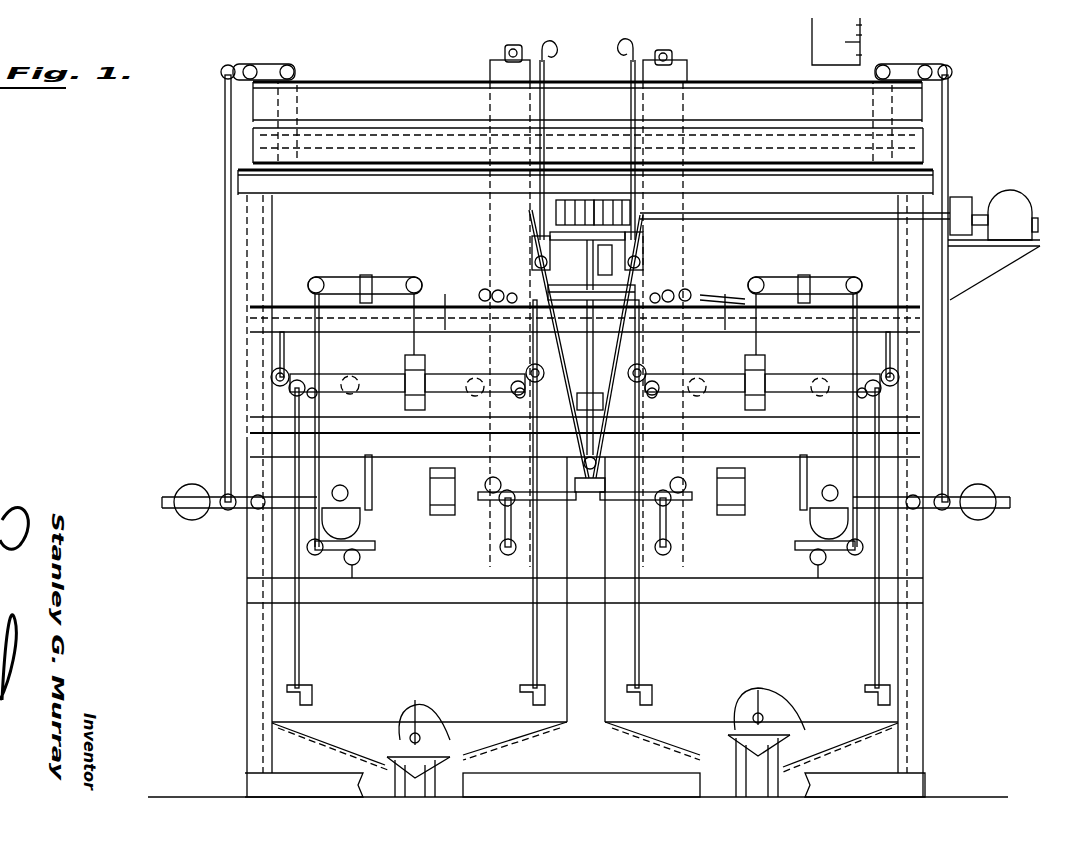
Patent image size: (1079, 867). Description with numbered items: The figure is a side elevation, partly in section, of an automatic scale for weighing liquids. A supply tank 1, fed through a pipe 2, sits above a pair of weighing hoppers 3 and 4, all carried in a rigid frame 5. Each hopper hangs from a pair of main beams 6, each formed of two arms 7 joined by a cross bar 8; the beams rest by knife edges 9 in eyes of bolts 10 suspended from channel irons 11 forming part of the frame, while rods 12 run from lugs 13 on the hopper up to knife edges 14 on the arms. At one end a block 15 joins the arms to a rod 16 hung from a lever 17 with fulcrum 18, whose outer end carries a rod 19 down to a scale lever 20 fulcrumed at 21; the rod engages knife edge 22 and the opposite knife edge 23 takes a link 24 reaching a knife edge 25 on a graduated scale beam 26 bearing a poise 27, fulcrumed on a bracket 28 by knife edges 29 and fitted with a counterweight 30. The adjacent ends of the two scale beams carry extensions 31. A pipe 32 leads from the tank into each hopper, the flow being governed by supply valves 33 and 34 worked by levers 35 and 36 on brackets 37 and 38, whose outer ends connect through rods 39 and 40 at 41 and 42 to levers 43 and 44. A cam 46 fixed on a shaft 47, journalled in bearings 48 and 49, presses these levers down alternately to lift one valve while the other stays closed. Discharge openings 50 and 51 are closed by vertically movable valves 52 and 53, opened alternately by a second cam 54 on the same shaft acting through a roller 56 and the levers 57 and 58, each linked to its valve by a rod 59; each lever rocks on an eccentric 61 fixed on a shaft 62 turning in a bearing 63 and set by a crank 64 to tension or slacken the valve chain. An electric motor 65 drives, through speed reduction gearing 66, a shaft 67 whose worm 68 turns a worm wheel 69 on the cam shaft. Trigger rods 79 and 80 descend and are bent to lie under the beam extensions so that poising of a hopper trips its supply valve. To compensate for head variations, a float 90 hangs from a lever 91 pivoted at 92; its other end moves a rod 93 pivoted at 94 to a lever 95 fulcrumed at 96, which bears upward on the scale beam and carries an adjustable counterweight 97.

The supply tank 1 is at (706, 100).
The pipe 2 is at (860, 42).
The weighing tank or hopper 3 is at (419, 698).
The weighing tank or hopper 4 is at (751, 698).
The frame 5 is at (266, 248).
The main beams 6 is at (299, 379).
The arms 7 is at (380, 390).
The cross bar 8 is at (358, 378).
The knife edges 9 is at (270, 388).
The bolts 10 is at (279, 345).
The channel irons 11 is at (448, 293).
The rods 12 is at (300, 628).
The lugs 13 is at (310, 684).
The knife edges 14 is at (310, 398).
The block 15 is at (412, 356).
The rod 16 is at (418, 293).
The lever 17 is at (388, 276).
The fulcrum 18 is at (368, 274).
The rod 19 is at (320, 365).
The scale lever 20 is at (368, 550).
The fulcrum 21 is at (360, 562).
The knife edge 22 is at (306, 549).
The knife edge 23 is at (505, 556).
The link 24 is at (504, 526).
The knife edge 25 is at (500, 508).
The graduated scale beam 26 is at (374, 485).
The poise 27 is at (470, 450).
The bracket 28 is at (494, 476).
The knife edges 29 is at (500, 503).
The counterweight 30 is at (361, 522).
The extensions 31 is at (593, 494).
The pipe or conduit 32 is at (489, 237).
The supply valve 33 is at (489, 70).
The supply valve 34 is at (688, 76).
The lever 35 is at (560, 46).
The lever 36 is at (668, 52).
The bracket 37 is at (504, 52).
The bracket 38 is at (655, 30).
The rod 39 is at (546, 108).
The rod 40 is at (630, 114).
The connection 41 is at (534, 266).
The connection 42 is at (644, 243).
The lever 43 is at (531, 252).
The lever 44 is at (641, 262).
The cam 46 is at (612, 258).
The shaft 47 is at (586, 278).
The bearing 48 is at (555, 210).
The bearing 49 is at (604, 402).
The discharge opening 50 is at (462, 785).
The discharge opening 51 is at (806, 785).
The discharge valve 52 is at (440, 750).
The discharge valve 53 is at (775, 728).
The cam 54 is at (610, 296).
The roller 56 is at (586, 350).
The lever 57 is at (410, 318).
The lever 58 is at (690, 318).
The rod 59 is at (402, 715).
The eccentric 61 is at (482, 302).
The shaft 62 is at (512, 289).
The bearing 63 is at (728, 291).
The handle or crank 64 is at (512, 304).
The electric motor 65 is at (1015, 192).
The speed reduction gearing 66 is at (965, 196).
The shaft 67 is at (788, 222).
The worm 68 is at (631, 210).
The worm wheel 69 is at (549, 238).
The rod 79 is at (577, 440).
The rod 80 is at (604, 440).
The float 90 is at (298, 105).
The lever 91 is at (270, 64).
The pivot 92 is at (243, 65).
The rod 93 is at (224, 222).
The pivotal connection 94 is at (222, 510).
The lever 95 is at (226, 494).
The pivot 96 is at (258, 510).
The counterweight 97 is at (178, 492).